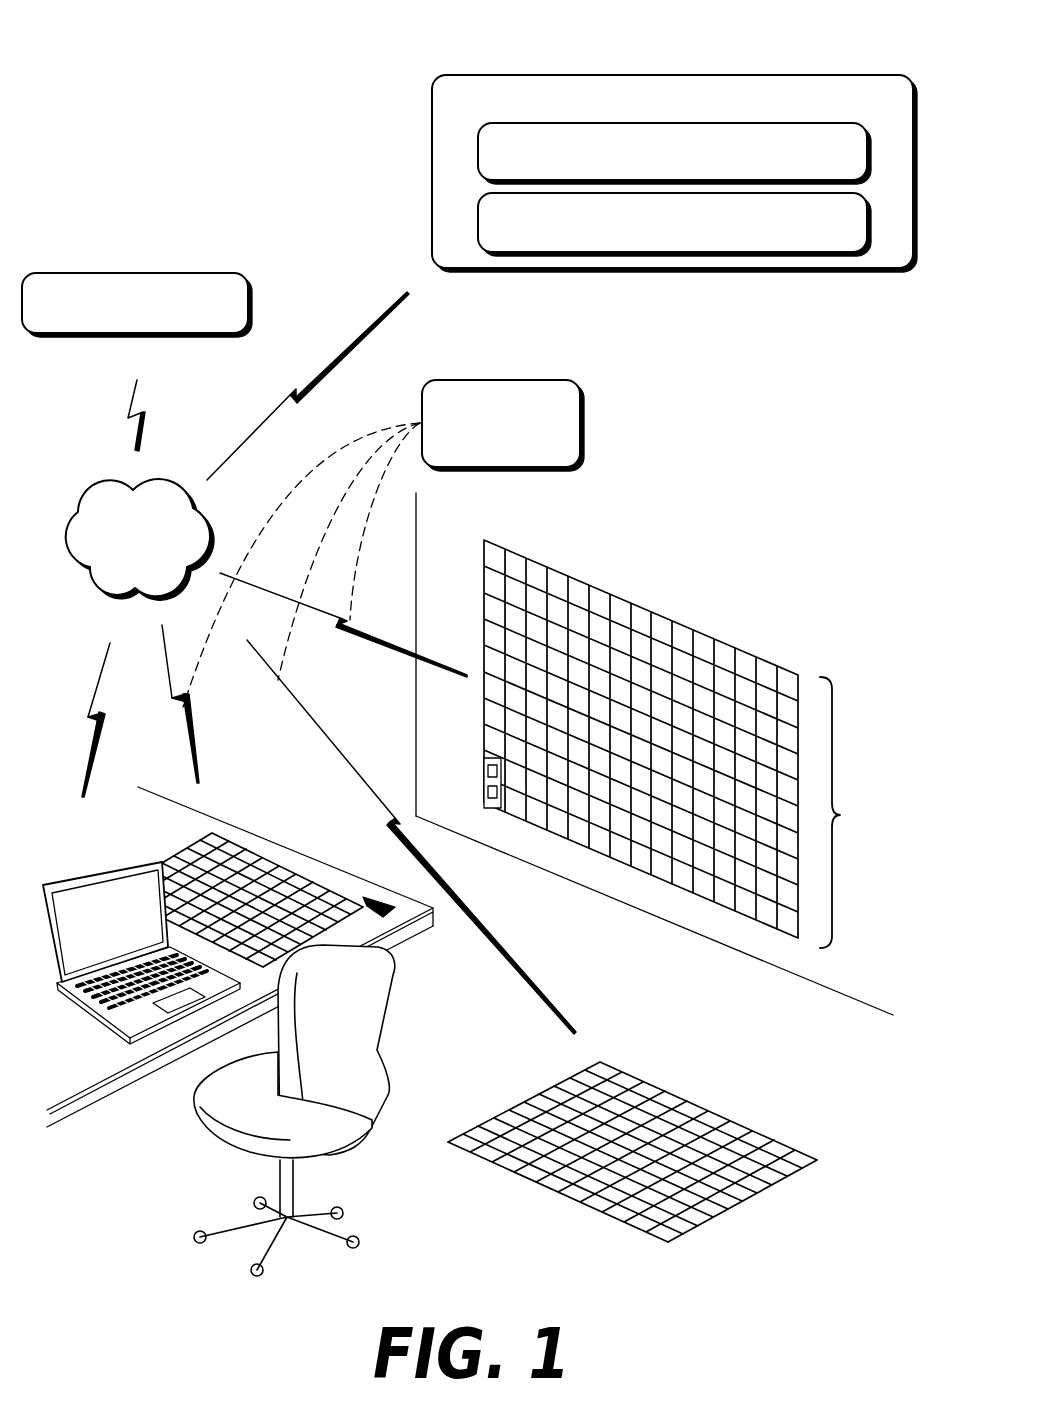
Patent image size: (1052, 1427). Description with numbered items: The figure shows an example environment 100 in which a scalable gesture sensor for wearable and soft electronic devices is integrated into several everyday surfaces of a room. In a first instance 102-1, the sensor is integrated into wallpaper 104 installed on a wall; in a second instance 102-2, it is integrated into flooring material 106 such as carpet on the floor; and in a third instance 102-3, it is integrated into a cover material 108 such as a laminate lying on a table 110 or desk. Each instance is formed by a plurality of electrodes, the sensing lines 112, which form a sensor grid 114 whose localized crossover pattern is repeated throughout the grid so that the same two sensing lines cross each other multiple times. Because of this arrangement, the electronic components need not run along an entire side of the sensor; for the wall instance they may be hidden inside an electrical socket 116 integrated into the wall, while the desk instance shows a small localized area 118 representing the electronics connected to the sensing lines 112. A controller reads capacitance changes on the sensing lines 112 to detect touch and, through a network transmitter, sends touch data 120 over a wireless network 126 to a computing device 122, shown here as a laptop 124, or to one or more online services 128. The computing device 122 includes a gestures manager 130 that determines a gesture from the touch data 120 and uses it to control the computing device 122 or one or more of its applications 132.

The example environment 100 is at (104, 48).
The first instance of the scalable gesture sensor 102-1 is at (715, 631).
The second instance of the scalable gesture sensor 102-2 is at (697, 1092).
The third instance of the scalable gesture sensor 102-3 is at (237, 841).
The wallpaper 104 is at (437, 707).
The flooring material 106 is at (817, 1030).
The cover material 108 is at (100, 1077).
The table 110 is at (120, 1092).
The sensing lines 112 is at (604, 615).
The sensor grid 114 is at (854, 812).
The electrical socket 116 is at (480, 776).
The localized area 118 is at (383, 917).
The touch data 120 is at (522, 445).
The computing device 122 is at (790, 108).
The laptop 124 is at (70, 878).
The wireless network 126 is at (155, 561).
The online services 128 is at (203, 315).
The gestures manager 130 is at (785, 163).
The applications 132 is at (765, 233).